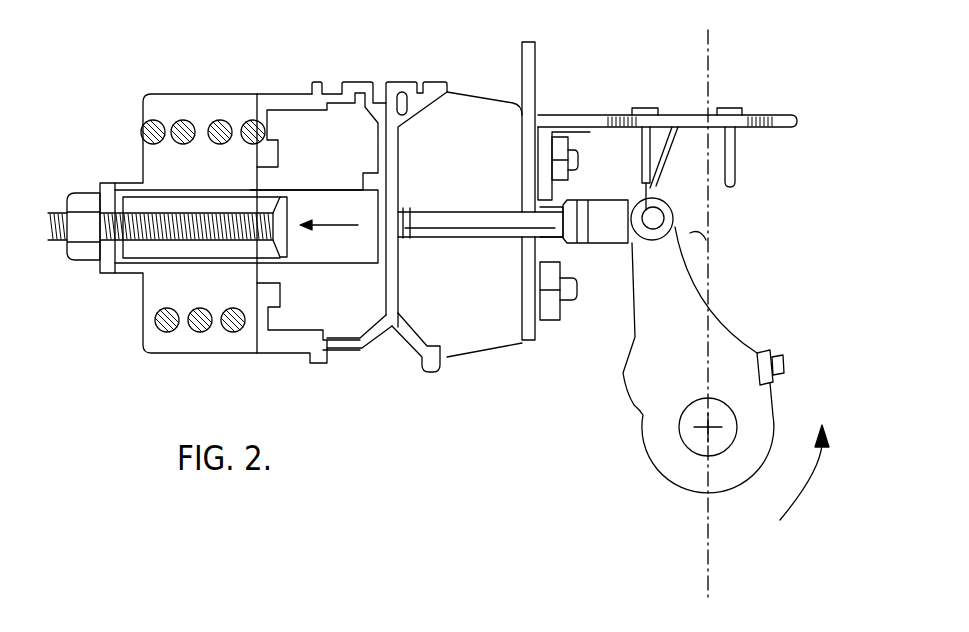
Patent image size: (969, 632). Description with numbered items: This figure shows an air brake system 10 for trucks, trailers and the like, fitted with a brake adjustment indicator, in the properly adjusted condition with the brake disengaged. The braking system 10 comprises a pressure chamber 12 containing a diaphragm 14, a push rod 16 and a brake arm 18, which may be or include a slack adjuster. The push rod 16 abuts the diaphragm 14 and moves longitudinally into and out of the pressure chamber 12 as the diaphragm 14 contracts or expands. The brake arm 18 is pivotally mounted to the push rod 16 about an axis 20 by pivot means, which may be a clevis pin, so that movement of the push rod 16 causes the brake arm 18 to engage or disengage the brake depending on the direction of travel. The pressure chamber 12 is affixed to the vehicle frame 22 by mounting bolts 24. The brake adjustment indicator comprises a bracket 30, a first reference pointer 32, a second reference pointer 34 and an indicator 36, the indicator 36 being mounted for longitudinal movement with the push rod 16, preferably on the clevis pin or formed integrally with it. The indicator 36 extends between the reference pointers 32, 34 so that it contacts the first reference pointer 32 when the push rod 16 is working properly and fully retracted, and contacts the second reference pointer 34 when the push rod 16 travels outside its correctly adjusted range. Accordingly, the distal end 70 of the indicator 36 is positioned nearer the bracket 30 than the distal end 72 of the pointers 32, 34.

The braking system 10 is at (323, 57).
The pressure chamber 12 is at (397, 72).
The diaphragm 14 is at (352, 353).
The push rod 16 is at (467, 232).
The brake arm 18 is at (727, 352).
The axis 20 is at (706, 243).
The vehicle frame 22 is at (536, 82).
The mounting bolts 24 is at (584, 130).
The bracket 30 is at (781, 113).
The first reference pointer 32 is at (640, 177).
The second reference pointer 34 is at (736, 146).
The indicator 36 is at (660, 185).
The distal end of indicator 70 is at (677, 117).
The distal end of pointers 72 is at (606, 220).